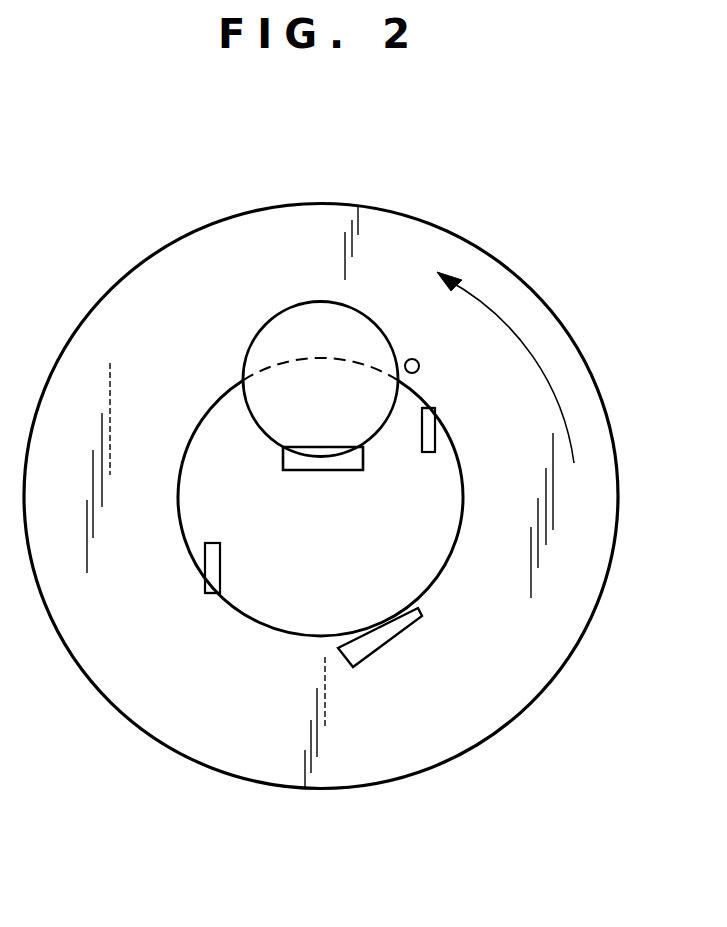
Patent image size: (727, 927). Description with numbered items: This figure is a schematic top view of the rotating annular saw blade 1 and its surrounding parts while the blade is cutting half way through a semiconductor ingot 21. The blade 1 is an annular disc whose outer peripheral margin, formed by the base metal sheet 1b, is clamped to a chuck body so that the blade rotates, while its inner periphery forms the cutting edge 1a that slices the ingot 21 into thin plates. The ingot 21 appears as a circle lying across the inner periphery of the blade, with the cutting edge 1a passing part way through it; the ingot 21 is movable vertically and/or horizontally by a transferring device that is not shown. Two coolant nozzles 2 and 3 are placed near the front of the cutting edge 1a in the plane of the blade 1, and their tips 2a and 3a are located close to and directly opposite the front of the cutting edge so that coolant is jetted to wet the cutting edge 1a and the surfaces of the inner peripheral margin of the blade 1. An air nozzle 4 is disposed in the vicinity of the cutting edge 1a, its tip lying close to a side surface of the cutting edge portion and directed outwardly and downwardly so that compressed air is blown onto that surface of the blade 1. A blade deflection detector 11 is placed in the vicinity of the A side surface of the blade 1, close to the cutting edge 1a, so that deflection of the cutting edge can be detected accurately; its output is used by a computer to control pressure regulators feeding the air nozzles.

The annular saw blade 1 is at (80, 322).
The cutting edge 1a is at (202, 422).
The base metal sheet 1b is at (195, 250).
The coolant nozzle 2 is at (222, 552).
The tip of coolant nozzle 2a is at (213, 588).
The coolant nozzle 3 is at (426, 452).
The tip of coolant nozzle 3a is at (423, 407).
The air nozzle 4 is at (377, 645).
The blade deflection detector 11 is at (412, 358).
The semiconductor ingot 21 is at (285, 307).